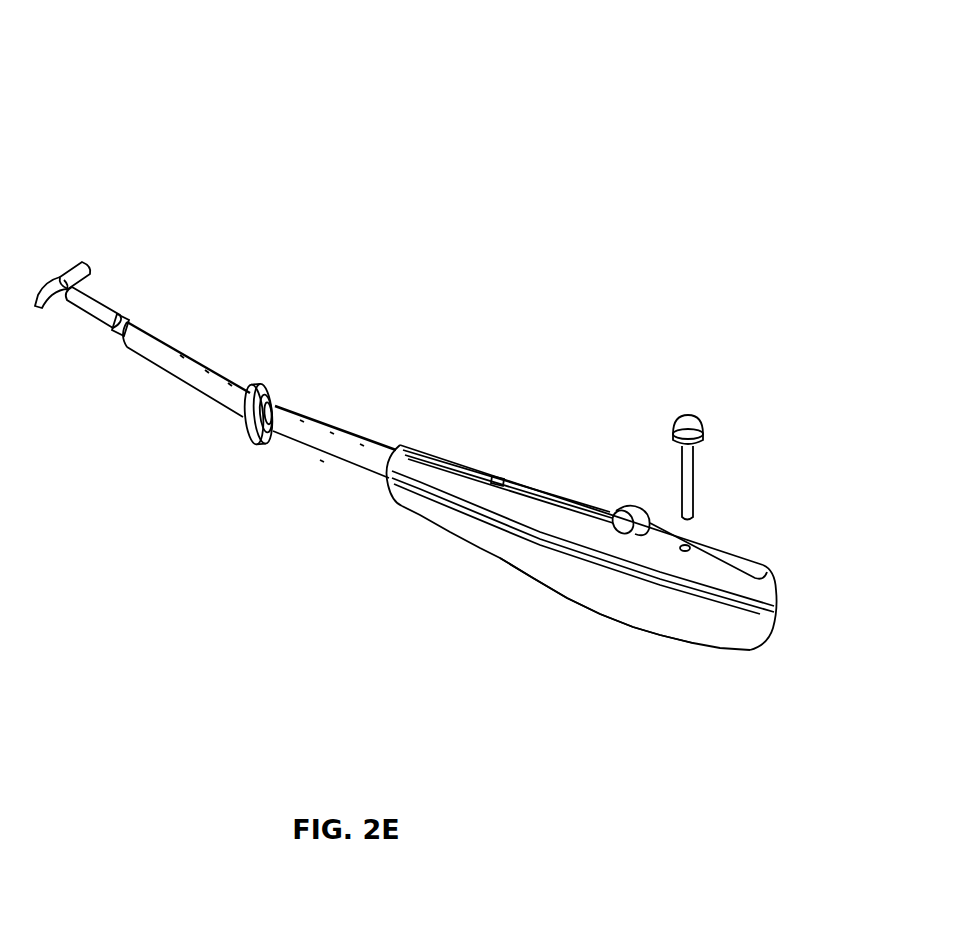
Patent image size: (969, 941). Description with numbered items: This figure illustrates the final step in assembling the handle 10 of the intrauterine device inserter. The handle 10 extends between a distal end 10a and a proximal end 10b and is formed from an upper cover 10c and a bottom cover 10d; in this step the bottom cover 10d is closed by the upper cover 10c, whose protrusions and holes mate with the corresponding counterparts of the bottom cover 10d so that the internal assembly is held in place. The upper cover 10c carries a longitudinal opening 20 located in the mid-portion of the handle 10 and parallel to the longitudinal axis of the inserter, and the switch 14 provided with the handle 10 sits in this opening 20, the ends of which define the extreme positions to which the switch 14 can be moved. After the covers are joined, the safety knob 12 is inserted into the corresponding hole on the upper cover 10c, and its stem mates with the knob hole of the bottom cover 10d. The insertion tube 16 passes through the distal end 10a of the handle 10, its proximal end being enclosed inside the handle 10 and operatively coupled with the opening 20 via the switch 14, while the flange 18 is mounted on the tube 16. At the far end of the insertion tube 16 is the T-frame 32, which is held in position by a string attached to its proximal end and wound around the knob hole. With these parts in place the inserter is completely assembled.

The handle 10 is at (833, 327).
The distal end 10a is at (398, 440).
The proximal end 10b is at (785, 577).
The upper cover 10c is at (463, 475).
The bottom cover 10d is at (689, 631).
The safety knob 12 is at (710, 418).
The switch 14 is at (623, 528).
The insertion tube 16 is at (187, 350).
The flange 18 is at (258, 384).
The longitudinal opening 20 is at (568, 490).
The T-frame 32 is at (65, 262).